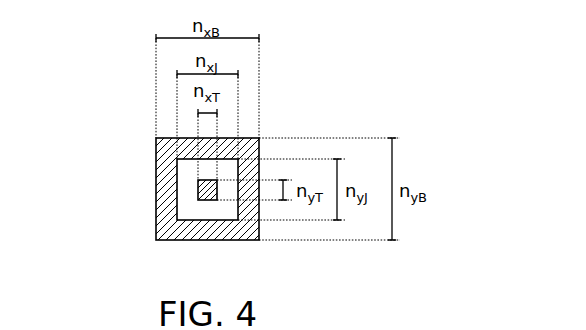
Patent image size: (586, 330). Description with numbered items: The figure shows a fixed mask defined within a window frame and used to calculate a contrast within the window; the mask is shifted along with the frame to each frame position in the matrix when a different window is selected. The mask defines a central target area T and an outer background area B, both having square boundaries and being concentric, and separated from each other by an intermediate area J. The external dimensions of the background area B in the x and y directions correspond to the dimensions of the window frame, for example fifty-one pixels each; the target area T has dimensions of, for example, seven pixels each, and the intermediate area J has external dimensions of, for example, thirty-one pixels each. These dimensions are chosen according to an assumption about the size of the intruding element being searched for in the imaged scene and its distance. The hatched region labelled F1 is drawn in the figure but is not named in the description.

The background area B is at (165, 175).
The frame region F1 is at (156, 220).
The intermediate area J is at (225, 208).
The target area T is at (208, 200).